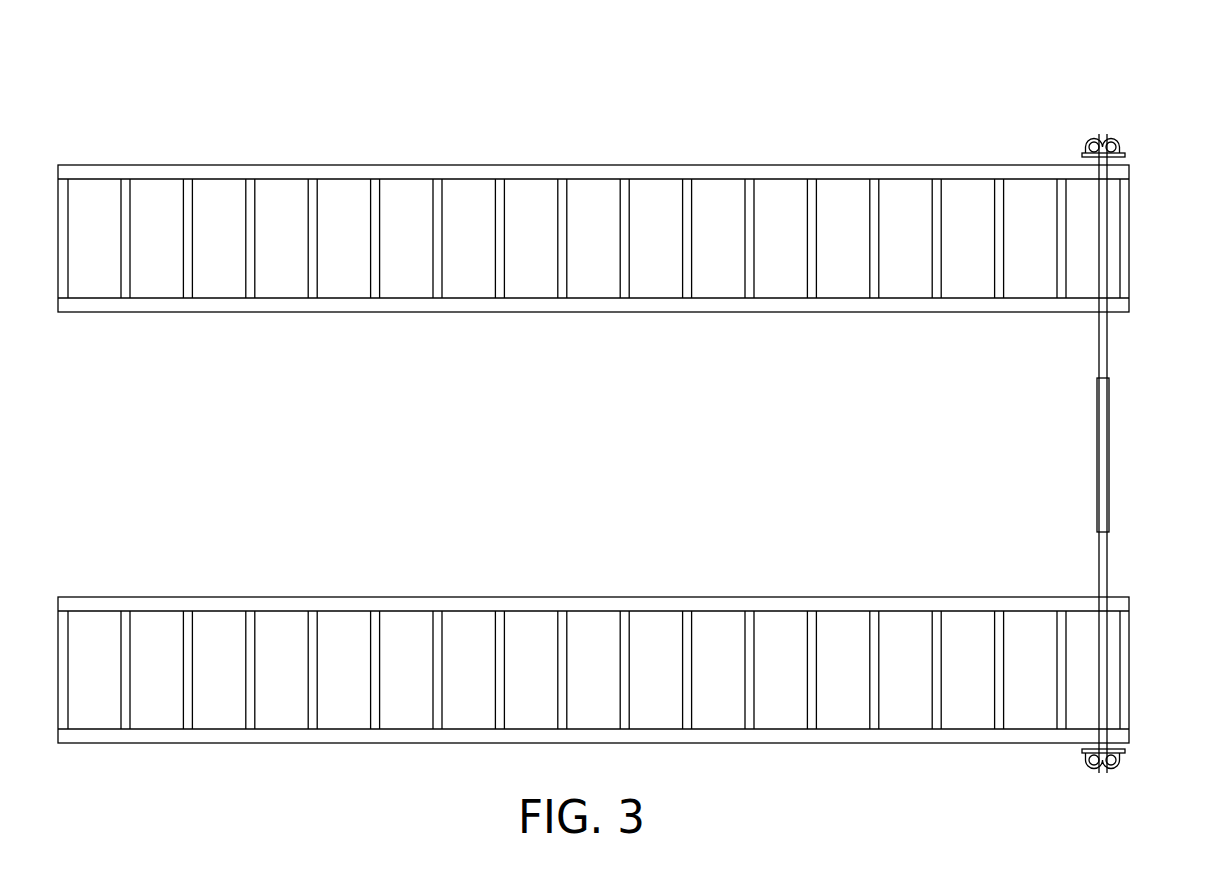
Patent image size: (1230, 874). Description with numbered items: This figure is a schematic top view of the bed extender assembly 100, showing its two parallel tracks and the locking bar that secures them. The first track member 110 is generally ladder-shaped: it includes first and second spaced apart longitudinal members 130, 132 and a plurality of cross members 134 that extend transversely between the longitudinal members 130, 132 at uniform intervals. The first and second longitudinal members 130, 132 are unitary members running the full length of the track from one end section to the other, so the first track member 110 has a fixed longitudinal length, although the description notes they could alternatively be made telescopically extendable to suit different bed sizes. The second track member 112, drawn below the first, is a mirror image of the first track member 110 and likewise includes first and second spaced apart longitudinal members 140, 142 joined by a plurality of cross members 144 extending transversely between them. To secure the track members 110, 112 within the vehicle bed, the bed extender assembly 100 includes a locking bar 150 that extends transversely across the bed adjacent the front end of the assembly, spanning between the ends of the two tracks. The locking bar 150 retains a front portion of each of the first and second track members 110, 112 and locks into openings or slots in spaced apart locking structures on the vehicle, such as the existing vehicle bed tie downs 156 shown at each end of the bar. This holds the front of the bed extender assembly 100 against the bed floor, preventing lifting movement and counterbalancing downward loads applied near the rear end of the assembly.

The bed extender assembly 100 is at (832, 118).
The first track member 110 is at (531, 157).
The second track member 112 is at (531, 587).
The first longitudinal member 130 is at (665, 165).
The second longitudinal member 132 is at (663, 312).
The cross members 134 is at (375, 198).
The first longitudinal member 140 is at (663, 744).
The second longitudinal member 142 is at (663, 597).
The cross members 144 is at (563, 630).
The locking bar 150 is at (1117, 413).
The vehicle bed tie downs 156 is at (1120, 143).